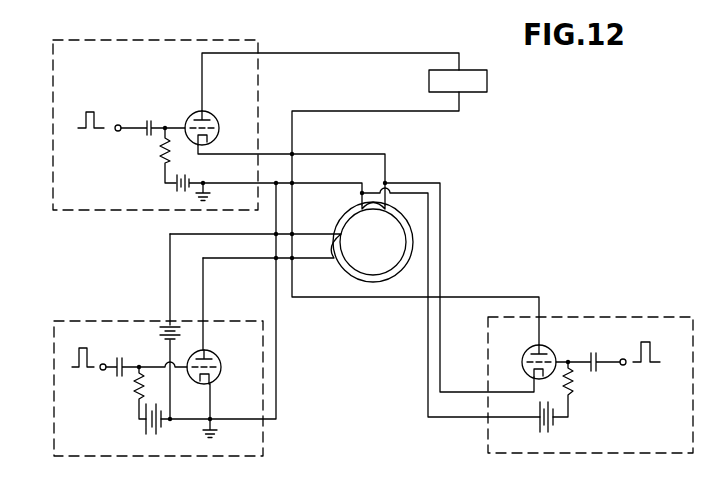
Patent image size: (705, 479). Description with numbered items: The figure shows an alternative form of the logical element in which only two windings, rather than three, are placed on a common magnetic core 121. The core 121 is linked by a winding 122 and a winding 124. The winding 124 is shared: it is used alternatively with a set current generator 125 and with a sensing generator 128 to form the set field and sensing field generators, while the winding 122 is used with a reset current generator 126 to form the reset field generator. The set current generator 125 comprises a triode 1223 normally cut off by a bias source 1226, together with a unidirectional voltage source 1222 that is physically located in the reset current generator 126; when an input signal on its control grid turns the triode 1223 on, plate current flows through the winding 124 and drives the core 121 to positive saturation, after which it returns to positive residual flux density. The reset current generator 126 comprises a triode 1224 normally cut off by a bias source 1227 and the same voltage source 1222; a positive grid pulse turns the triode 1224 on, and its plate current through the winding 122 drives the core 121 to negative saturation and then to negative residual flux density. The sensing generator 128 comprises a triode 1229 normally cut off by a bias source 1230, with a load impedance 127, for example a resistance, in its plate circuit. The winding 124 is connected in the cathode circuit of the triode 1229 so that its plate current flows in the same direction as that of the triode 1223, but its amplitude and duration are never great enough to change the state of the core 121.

The sensing generator 128 is at (53, 95).
The triode 1229 is at (207, 116).
The bias source 1230 is at (175, 189).
The load impedance 127 is at (470, 92).
The core 121 is at (353, 276).
The winding 124 is at (381, 213).
The winding 122 is at (346, 248).
The reset current generator 126 is at (113, 320).
The unidirectional voltage source 1222 is at (167, 331).
The triode 1224 is at (209, 353).
The bias source 1227 is at (156, 433).
The set current generator 125 is at (607, 314).
The triode 1223 is at (548, 350).
The bias source 1226 is at (545, 432).